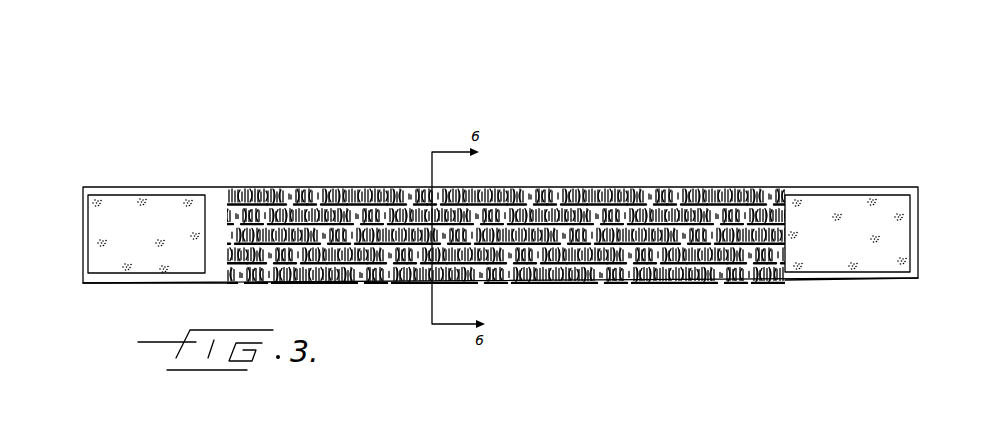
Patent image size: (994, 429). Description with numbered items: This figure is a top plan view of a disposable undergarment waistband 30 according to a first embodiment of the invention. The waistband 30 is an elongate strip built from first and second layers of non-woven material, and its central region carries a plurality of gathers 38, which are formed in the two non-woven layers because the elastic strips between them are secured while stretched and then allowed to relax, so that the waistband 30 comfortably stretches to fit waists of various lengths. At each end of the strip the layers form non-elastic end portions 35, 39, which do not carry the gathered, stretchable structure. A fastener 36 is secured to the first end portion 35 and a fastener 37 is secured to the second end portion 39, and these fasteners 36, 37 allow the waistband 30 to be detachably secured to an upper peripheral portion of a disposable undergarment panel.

The disposable undergarment waistband 30 is at (762, 122).
The non-elastic end portion 35 is at (115, 278).
The fastener 36 is at (118, 205).
The fastener 37 is at (829, 201).
The gathers 38 is at (647, 235).
The non-elastic end portion 39 is at (872, 277).